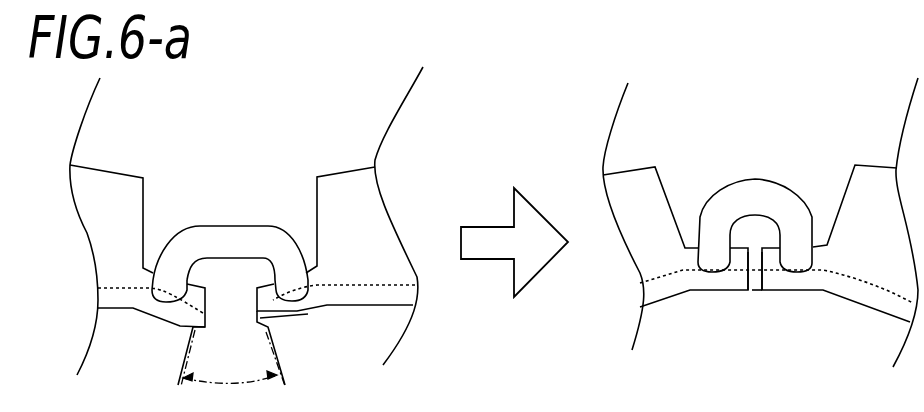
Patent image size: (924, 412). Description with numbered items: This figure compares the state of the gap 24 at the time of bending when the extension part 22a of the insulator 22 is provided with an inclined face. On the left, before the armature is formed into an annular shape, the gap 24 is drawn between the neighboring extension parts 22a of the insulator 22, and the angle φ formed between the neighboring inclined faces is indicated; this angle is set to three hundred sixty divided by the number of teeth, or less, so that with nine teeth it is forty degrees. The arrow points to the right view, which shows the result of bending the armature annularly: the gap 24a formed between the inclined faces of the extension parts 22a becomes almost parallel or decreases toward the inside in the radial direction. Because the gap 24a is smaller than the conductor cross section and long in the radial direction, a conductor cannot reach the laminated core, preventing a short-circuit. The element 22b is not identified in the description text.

The insulator 22 is at (107, 207).
The extension part 22a is at (167, 313).
The protruding portion 22b is at (215, 243).
The gap 24 is at (232, 305).
The gap 24a is at (757, 275).